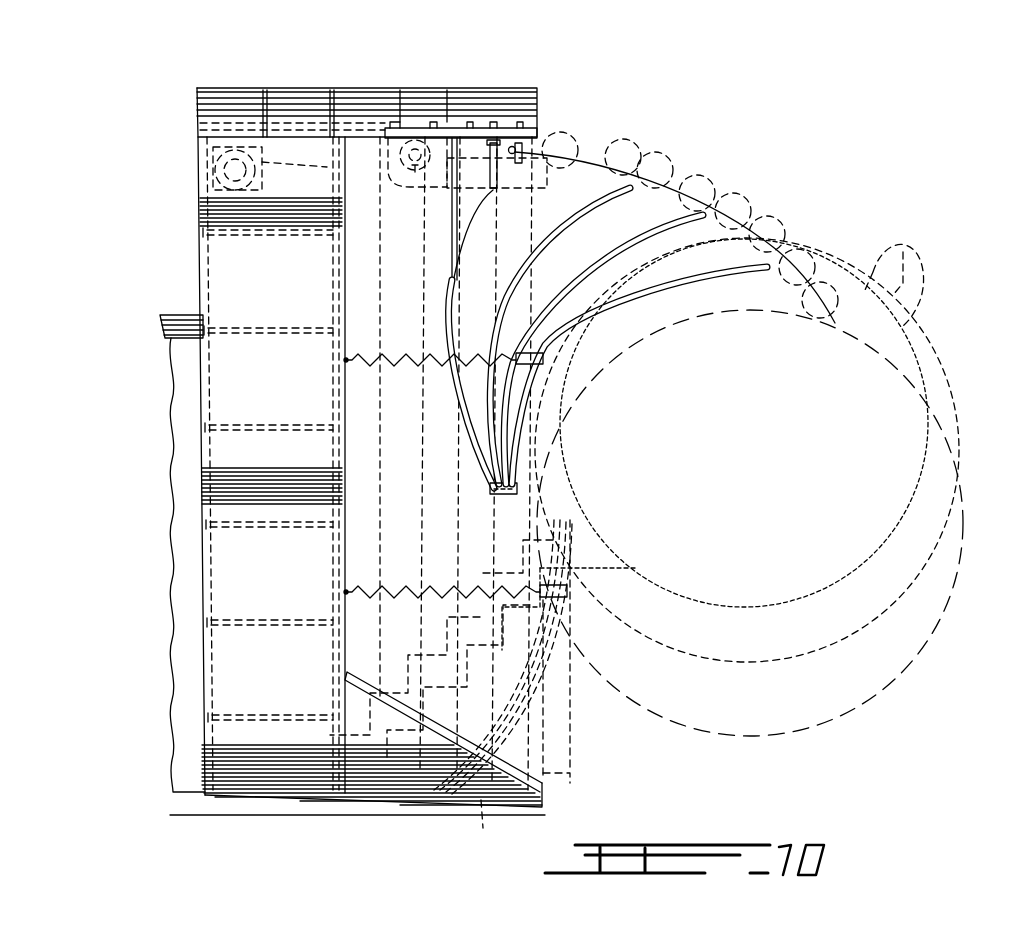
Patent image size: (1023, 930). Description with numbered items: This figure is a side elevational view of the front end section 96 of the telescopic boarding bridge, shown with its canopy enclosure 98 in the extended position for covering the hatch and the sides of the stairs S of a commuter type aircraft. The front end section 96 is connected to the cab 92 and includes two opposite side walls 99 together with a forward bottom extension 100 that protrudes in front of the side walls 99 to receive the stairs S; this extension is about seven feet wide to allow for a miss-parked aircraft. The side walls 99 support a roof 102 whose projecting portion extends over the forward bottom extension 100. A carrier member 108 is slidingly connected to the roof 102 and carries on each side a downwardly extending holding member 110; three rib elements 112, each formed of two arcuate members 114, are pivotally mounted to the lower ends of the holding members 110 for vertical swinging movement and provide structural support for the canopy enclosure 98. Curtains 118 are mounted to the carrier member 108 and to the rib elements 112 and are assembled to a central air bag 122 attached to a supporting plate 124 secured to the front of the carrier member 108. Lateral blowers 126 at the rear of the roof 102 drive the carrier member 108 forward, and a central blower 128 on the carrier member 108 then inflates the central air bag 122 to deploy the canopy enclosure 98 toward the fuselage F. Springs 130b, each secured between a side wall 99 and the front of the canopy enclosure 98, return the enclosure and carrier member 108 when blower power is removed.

The cab 92 is at (172, 309).
The front end section 96 is at (168, 170).
The canopy enclosure 98 is at (740, 175).
The side walls 99 is at (283, 391).
The forward bottom extension 100 is at (562, 800).
The roof 102 is at (250, 88).
The carrier member 108 is at (466, 121).
The holding member 110 is at (477, 231).
The rib elements 112 is at (748, 258).
The arcuate members 114 is at (603, 256).
The curtains 118 is at (565, 744).
The central air bag 122 is at (670, 148).
The supporting plate 124 is at (527, 140).
The lateral blowers 126 is at (197, 188).
The central blower 128 is at (415, 250).
The springs 130b is at (380, 395).
The stairs S is at (482, 826).
The fuselage F is at (894, 278).